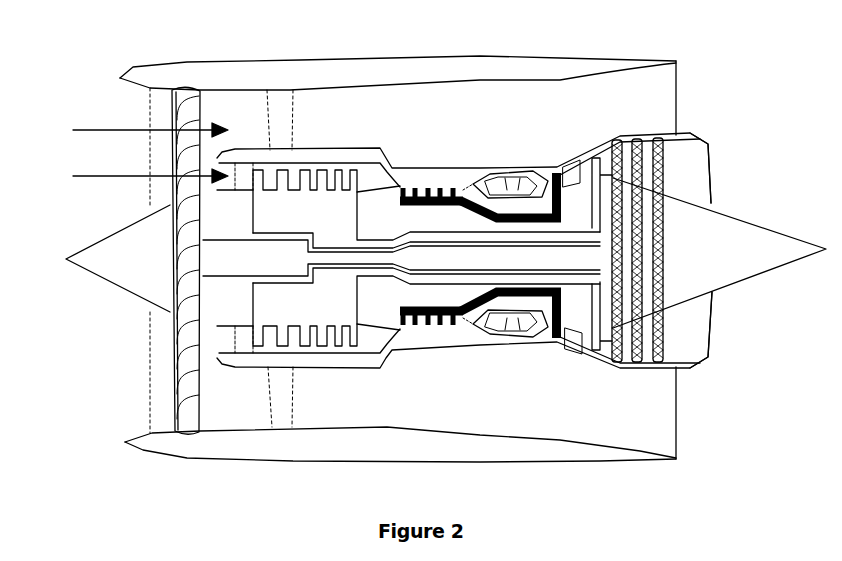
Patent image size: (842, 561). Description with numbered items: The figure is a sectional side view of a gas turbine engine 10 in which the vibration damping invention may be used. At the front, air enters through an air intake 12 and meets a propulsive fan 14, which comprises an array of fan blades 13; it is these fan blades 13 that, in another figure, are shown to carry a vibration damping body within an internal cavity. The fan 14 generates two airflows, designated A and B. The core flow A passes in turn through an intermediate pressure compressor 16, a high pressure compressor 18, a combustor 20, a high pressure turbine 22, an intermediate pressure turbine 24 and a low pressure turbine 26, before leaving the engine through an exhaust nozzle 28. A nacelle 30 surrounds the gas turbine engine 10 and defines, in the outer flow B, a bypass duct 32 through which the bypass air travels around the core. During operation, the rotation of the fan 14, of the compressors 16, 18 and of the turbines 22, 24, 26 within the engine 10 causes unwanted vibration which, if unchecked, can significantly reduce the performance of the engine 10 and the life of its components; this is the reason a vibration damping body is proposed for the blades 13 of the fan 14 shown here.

The gas turbine engine 10 is at (94, 60).
The air intake 12 is at (160, 112).
The fan blades 13 is at (180, 357).
The propulsive fan 14 is at (180, 97).
The intermediate pressure compressor 16 is at (295, 208).
The high pressure compressor 18 is at (425, 197).
The combustor 20 is at (515, 182).
The high pressure turbine 22 is at (557, 177).
The intermediate pressure turbine 24 is at (600, 177).
The low pressure turbine 26 is at (667, 150).
The exhaust nozzle 28 is at (692, 184).
The nacelle 30 is at (271, 90).
The bypass duct 32 is at (461, 129).
The axial flow A is at (135, 180).
The axial flow B is at (135, 137).